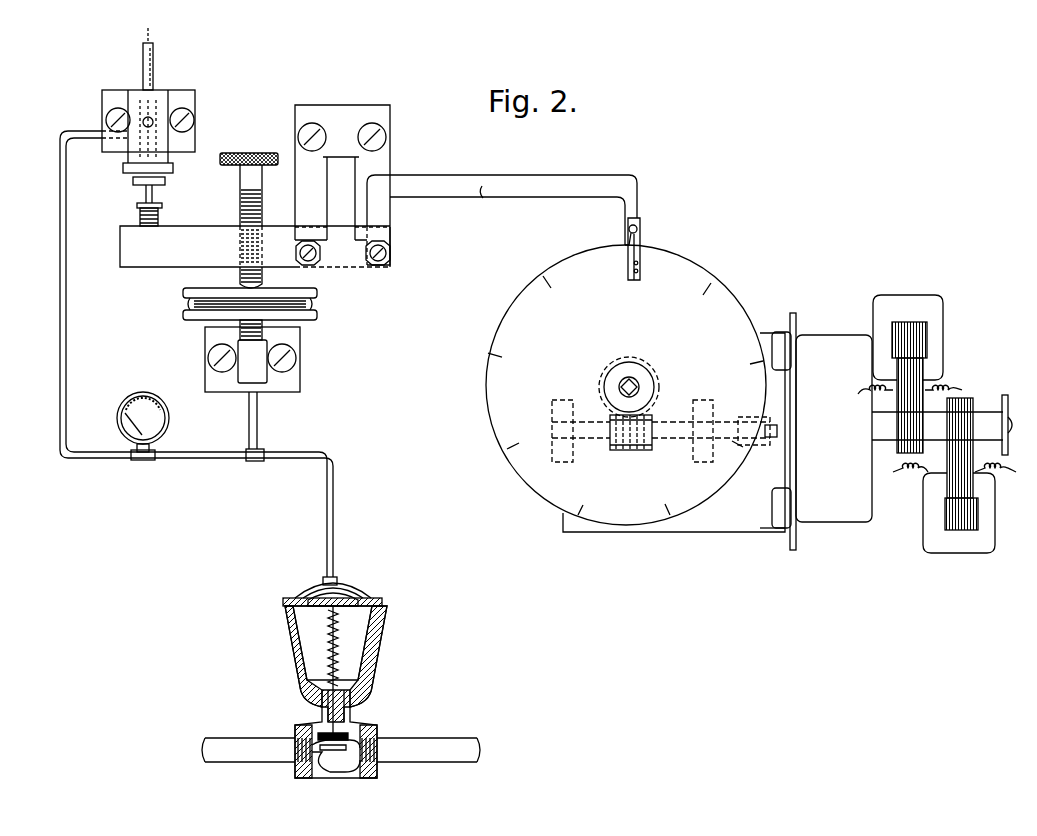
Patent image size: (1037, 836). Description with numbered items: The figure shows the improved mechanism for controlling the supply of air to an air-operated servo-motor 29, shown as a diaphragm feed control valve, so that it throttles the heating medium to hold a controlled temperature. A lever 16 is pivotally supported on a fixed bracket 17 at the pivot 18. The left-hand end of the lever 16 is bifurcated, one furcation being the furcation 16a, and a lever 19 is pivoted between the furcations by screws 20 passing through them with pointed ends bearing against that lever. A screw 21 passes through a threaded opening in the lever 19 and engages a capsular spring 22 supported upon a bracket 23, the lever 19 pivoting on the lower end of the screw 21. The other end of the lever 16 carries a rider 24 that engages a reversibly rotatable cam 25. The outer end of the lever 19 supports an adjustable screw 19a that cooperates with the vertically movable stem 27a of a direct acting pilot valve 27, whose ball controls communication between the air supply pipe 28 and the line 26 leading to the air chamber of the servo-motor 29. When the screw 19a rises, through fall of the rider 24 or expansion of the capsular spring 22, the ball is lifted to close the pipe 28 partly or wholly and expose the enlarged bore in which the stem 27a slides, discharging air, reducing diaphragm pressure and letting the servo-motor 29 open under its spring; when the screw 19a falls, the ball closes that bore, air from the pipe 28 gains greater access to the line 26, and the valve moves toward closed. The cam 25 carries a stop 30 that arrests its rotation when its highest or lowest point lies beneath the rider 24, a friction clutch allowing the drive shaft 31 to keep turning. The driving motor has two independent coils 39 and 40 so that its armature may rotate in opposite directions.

The lever 16 is at (502, 210).
The furcation 16a is at (357, 258).
The fixed bracket 17 is at (384, 158).
The pivot 18 is at (316, 259).
The lever 19 is at (152, 250).
The adjustable screw 19a is at (140, 215).
The screws 20 is at (390, 265).
The screw 21 is at (240, 205).
The capsular spring 22 is at (185, 315).
The bracket 23 is at (302, 378).
The rider 24 is at (626, 242).
The cam 25 is at (500, 401).
The line 26 is at (60, 310).
The pilot valve 27 is at (135, 95).
The stem 27a is at (155, 192).
The air supply pipe 28 is at (155, 72).
The servo-motor 29 is at (378, 634).
The stop 30 is at (641, 250).
The drive shaft 31 is at (667, 444).
The coil 39 is at (928, 545).
The coil 40 is at (937, 312).